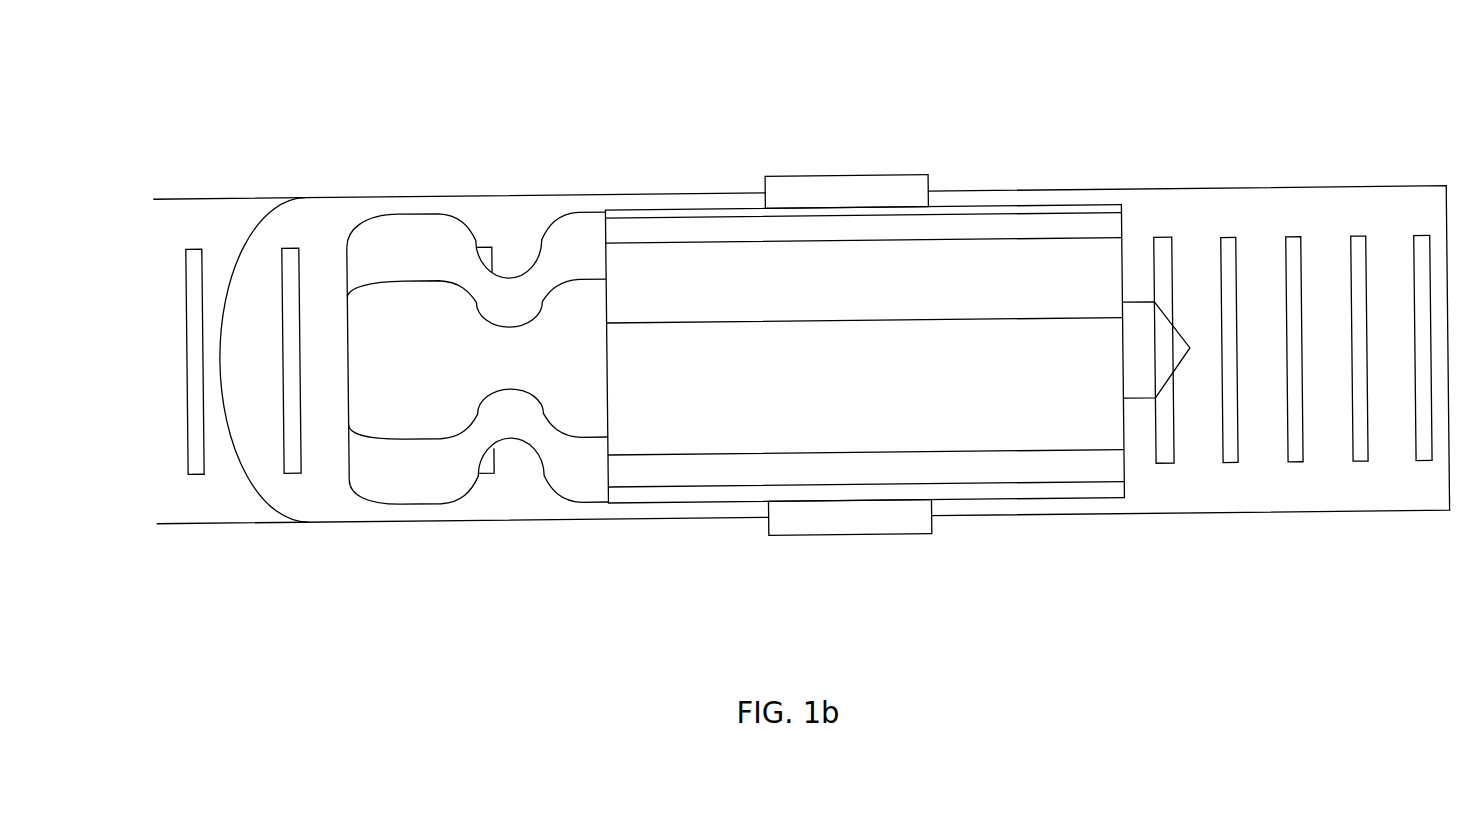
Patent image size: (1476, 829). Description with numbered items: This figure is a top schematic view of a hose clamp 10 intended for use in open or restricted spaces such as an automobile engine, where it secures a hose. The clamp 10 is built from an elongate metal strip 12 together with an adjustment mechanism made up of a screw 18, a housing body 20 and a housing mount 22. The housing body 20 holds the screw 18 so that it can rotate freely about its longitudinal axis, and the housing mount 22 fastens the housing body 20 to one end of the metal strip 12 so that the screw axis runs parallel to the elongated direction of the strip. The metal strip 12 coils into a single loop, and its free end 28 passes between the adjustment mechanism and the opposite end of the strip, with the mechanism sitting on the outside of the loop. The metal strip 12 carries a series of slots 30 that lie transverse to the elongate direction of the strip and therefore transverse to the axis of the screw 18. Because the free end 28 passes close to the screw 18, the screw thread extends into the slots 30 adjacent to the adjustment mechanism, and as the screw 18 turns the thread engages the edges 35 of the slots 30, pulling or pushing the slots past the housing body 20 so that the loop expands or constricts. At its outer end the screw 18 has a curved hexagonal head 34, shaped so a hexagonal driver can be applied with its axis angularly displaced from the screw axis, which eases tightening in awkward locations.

The clamp 10 is at (672, 127).
The elongate metal strip 12 is at (230, 356).
The screw 18 is at (411, 344).
The housing body 20 is at (856, 367).
The housing mount 22 is at (868, 188).
The free end 28 is at (250, 477).
The slots 30 is at (1292, 242).
The curved hexagonal head 34 is at (402, 228).
The edges 35 is at (1238, 337).